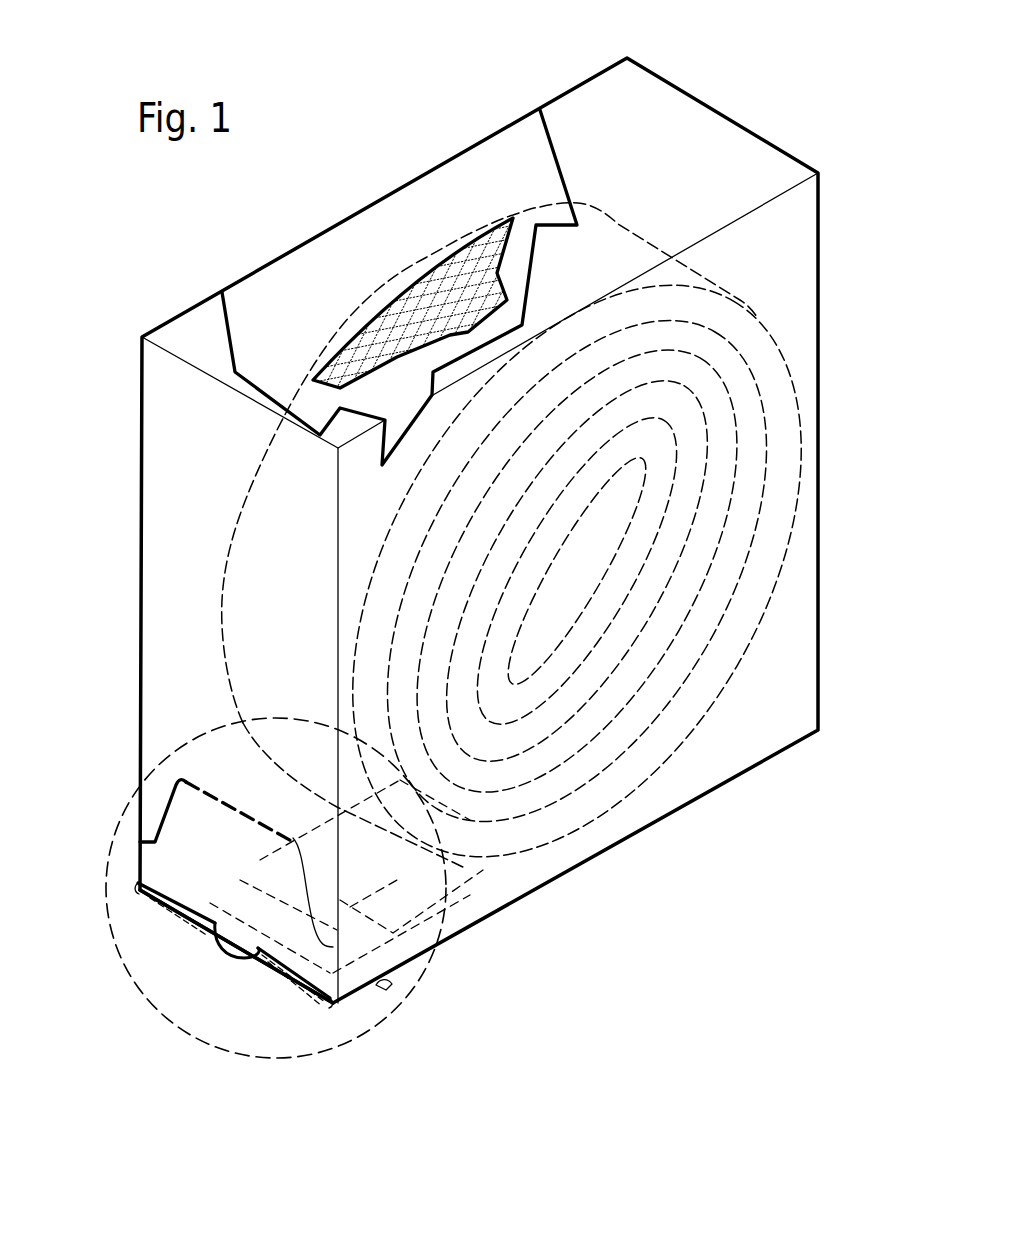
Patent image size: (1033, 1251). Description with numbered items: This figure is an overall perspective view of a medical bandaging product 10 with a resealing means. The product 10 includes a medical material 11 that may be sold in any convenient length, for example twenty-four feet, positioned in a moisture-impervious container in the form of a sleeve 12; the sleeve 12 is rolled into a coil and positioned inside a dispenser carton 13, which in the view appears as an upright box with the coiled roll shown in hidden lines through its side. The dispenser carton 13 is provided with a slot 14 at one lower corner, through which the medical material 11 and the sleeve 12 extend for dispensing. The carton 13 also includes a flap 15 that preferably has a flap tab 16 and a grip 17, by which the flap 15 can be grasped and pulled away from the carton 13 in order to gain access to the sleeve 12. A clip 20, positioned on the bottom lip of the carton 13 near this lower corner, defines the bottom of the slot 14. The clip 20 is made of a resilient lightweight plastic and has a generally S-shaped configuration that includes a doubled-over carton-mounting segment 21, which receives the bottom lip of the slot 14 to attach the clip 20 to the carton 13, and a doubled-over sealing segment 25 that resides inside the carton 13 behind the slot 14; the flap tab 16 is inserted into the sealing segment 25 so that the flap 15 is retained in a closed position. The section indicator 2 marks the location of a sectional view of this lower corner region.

The section line 2 is at (365, 1020).
The medical bandaging product 10 is at (163, 292).
The medical material 11 is at (440, 243).
The sleeve 12 is at (615, 250).
The dispenser carton 13 is at (795, 235).
The slot 14 is at (373, 952).
The flap 15 is at (183, 818).
The flap tab 16 is at (130, 977).
The grip 17 is at (240, 947).
The clip 20 is at (297, 987).
The carton-mounting segment 21 is at (327, 1013).
The sealing segment 25 is at (383, 983).